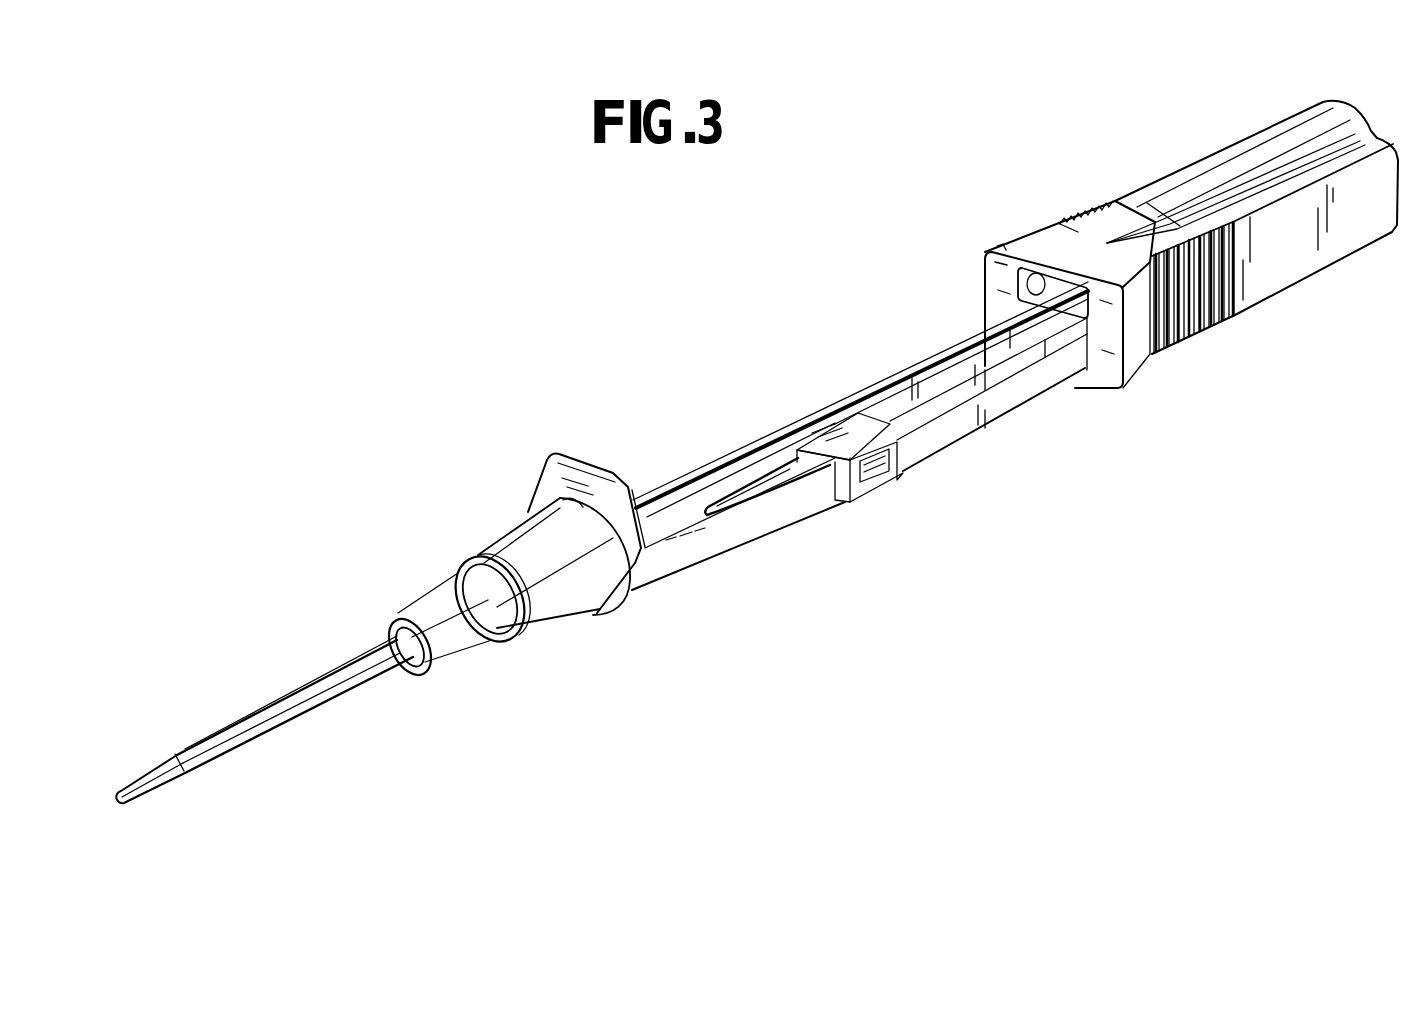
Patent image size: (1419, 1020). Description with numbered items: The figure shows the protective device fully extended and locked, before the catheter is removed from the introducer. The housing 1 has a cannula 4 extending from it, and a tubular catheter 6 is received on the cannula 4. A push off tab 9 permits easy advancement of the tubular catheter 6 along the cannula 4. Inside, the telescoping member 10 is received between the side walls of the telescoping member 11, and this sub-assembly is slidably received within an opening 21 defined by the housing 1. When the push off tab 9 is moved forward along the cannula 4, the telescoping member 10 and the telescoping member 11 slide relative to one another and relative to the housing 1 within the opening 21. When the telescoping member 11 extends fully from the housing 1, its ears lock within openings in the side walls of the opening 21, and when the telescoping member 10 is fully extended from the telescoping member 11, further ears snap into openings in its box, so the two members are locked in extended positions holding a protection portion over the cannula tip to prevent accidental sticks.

The housing 1 is at (1353, 262).
The cannula 4 is at (692, 487).
The tubular catheter 6 is at (393, 612).
The push off tab 9 is at (557, 480).
The telescoping member 10 is at (700, 543).
The telescoping member 11 is at (932, 445).
The opening 21 is at (1088, 360).